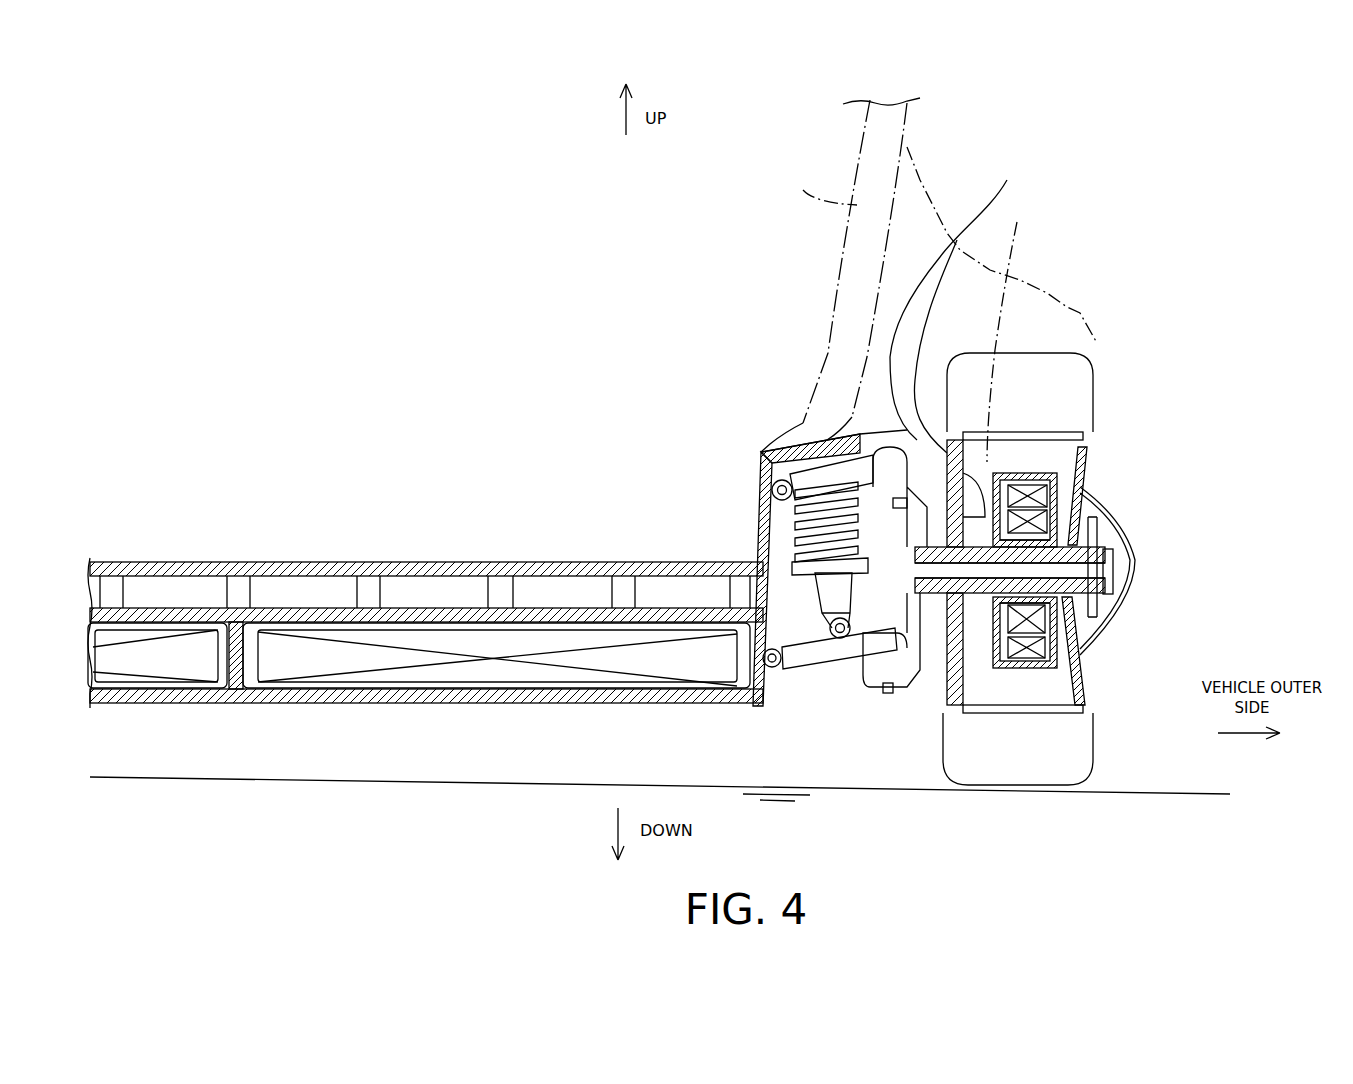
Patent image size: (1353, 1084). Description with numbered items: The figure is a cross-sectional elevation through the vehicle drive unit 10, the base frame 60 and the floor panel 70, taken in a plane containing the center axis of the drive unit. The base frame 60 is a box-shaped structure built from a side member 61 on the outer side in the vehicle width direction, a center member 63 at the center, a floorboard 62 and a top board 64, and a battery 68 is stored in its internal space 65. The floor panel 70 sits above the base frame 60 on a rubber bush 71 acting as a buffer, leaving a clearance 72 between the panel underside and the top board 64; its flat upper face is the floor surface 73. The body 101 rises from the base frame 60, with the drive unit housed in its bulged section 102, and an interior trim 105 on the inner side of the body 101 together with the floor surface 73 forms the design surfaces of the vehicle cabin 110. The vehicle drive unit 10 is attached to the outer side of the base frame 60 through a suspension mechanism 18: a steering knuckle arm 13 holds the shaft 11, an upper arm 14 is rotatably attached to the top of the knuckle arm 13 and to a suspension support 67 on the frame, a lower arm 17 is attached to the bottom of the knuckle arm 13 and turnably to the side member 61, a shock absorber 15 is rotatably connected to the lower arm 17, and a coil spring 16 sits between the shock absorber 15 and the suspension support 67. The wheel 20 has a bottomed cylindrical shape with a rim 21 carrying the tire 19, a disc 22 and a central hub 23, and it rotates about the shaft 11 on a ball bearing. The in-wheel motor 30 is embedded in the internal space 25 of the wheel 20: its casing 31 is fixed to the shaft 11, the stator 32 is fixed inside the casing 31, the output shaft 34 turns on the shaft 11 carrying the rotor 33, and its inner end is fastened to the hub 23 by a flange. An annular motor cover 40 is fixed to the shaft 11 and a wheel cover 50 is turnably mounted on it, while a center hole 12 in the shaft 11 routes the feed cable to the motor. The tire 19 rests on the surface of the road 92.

The vehicle drive unit 10 is at (1157, 642).
The shaft 11 is at (1135, 575).
The center hole 12 is at (1097, 573).
The steering knuckle arm 13 is at (920, 690).
The upper arm 14 is at (887, 437).
The shock absorber 15 is at (815, 660).
The coil spring 16 is at (757, 500).
The lower arm 17 is at (840, 690).
The suspension mechanism 18 is at (888, 724).
The tire 19 is at (1030, 260).
The wheel 20 is at (1106, 437).
The rim 21 is at (1022, 475).
The disc 22 is at (1007, 180).
The hub 23 is at (957, 240).
The internal space 25 is at (1010, 435).
The in-wheel motor 30 is at (1058, 585).
The casing 31 is at (1090, 400).
The stator 32 is at (1030, 668).
The rotor 33 is at (1040, 668).
The output shaft 34 is at (1000, 668).
The motor cover 40 is at (1092, 481).
The wheel cover 50 is at (1139, 535).
The base frame 60 is at (425, 601).
The side member 61 is at (740, 705).
The floorboard 62 is at (570, 700).
The center member 63 is at (232, 700).
The top board 64 is at (437, 623).
The internal space 65 is at (520, 630).
The suspension support 67 is at (768, 555).
The battery 68 is at (265, 700).
The floor panel 70 is at (324, 552).
The rubber bush 71 is at (408, 565).
The clearance 72 is at (290, 562).
The floor surface 73 is at (523, 562).
The road 92 is at (1115, 793).
The body 101 is at (907, 137).
The bulged section 102 is at (1017, 222).
The interior trim 105 is at (803, 190).
The vehicle cabin 110 is at (515, 193).